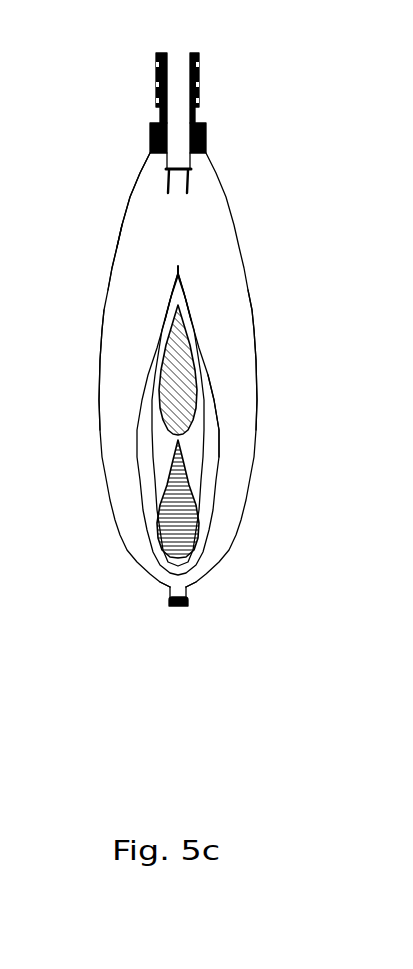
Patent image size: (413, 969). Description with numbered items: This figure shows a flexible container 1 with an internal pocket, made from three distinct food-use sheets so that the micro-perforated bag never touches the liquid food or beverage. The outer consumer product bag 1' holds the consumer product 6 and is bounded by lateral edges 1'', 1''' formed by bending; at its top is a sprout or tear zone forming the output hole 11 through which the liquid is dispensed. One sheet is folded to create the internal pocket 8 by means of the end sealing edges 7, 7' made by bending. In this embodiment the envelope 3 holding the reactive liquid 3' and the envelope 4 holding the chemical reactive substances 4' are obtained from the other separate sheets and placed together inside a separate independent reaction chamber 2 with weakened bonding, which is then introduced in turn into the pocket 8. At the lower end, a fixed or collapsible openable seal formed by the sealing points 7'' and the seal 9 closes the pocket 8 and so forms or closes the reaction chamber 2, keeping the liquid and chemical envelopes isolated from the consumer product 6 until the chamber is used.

The flexible container 1 is at (172, 329).
The consumer product bag 1' is at (97, 200).
The lateral edge 1'' is at (75, 370).
The lateral edge 1''' is at (301, 360).
The reaction chamber 2 is at (150, 455).
The envelope of reactive liquid 3 is at (229, 499).
The reactive liquid 3' is at (229, 508).
The envelope of chemical reactive substances 4 is at (122, 376).
The chemical reactive substances 4' is at (122, 370).
The consumer product 6 is at (145, 247).
The end sealing edge 7 is at (133, 424).
The end sealing edge 7' is at (257, 448).
The sealing points 7'' is at (123, 597).
The internal pocket 8 is at (175, 289).
The seal 9 is at (177, 606).
The output hole 11 is at (205, 128).